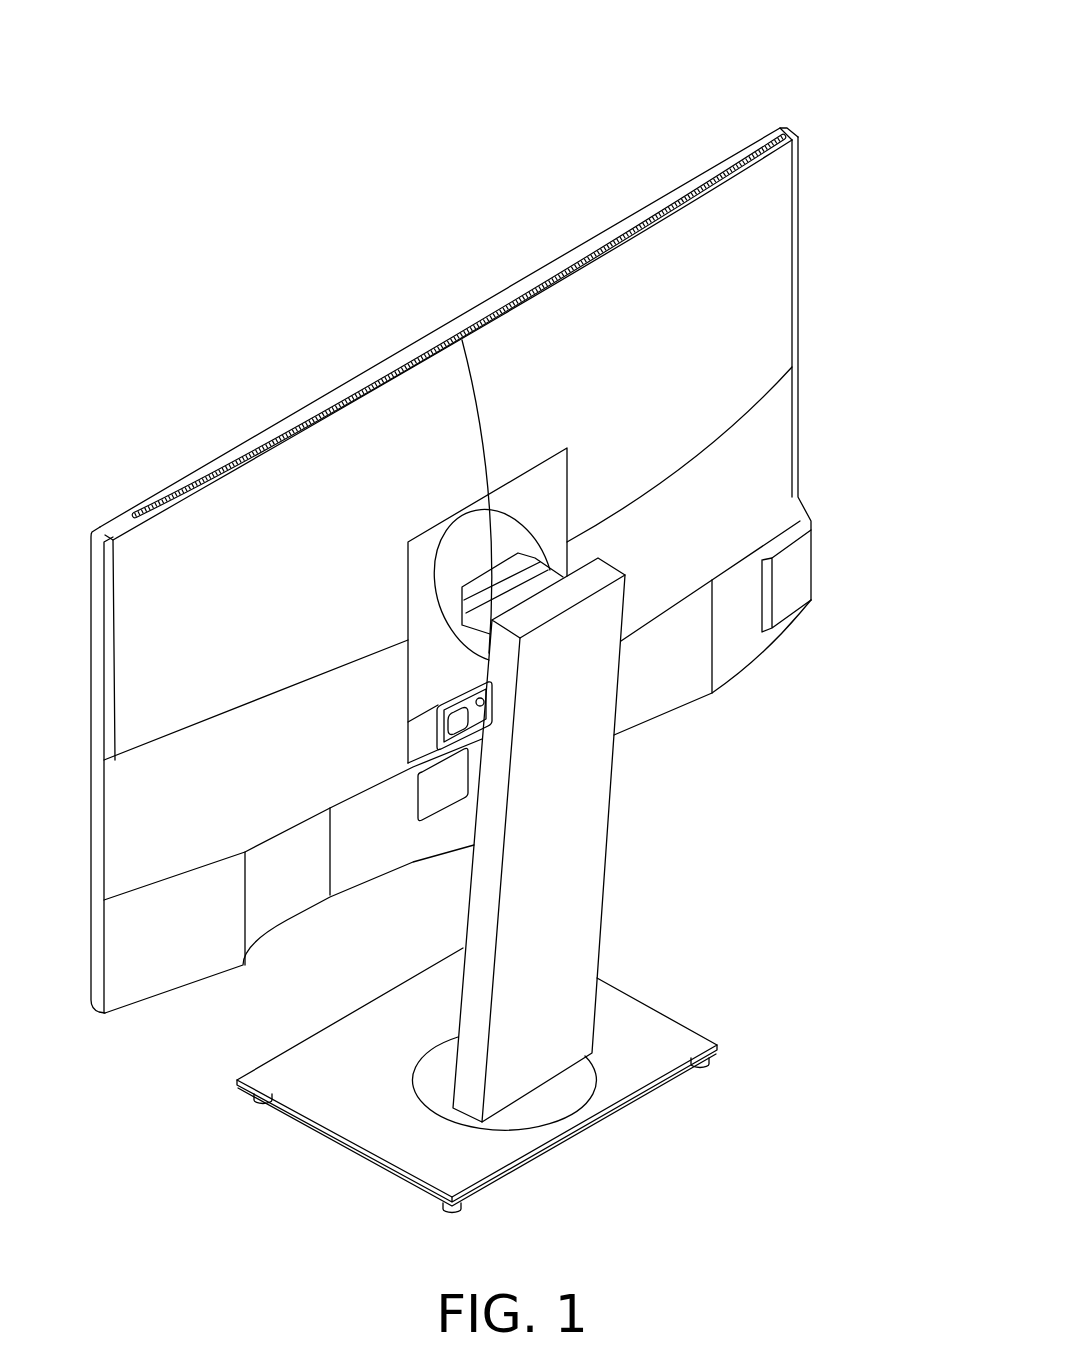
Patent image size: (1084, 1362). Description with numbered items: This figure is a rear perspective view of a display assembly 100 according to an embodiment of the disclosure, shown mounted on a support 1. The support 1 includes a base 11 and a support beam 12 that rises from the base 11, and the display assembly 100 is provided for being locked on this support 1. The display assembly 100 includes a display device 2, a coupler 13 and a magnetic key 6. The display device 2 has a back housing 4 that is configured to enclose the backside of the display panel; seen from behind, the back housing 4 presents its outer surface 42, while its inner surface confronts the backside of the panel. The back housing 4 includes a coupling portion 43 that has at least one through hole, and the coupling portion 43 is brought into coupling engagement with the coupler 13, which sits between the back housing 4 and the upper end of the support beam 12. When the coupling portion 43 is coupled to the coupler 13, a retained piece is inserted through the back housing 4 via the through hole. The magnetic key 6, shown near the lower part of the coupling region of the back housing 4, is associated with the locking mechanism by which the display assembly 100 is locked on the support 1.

The display assembly 100 is at (829, 116).
The display device 2 is at (617, 203).
The back housing 4 is at (800, 408).
The outer surface 42 is at (706, 335).
The coupling portion 43 is at (533, 448).
The coupler 13 is at (548, 492).
The support 1 is at (650, 797).
The magnetic key 6 is at (472, 727).
The support beam 12 is at (562, 915).
The base 11 is at (635, 1032).